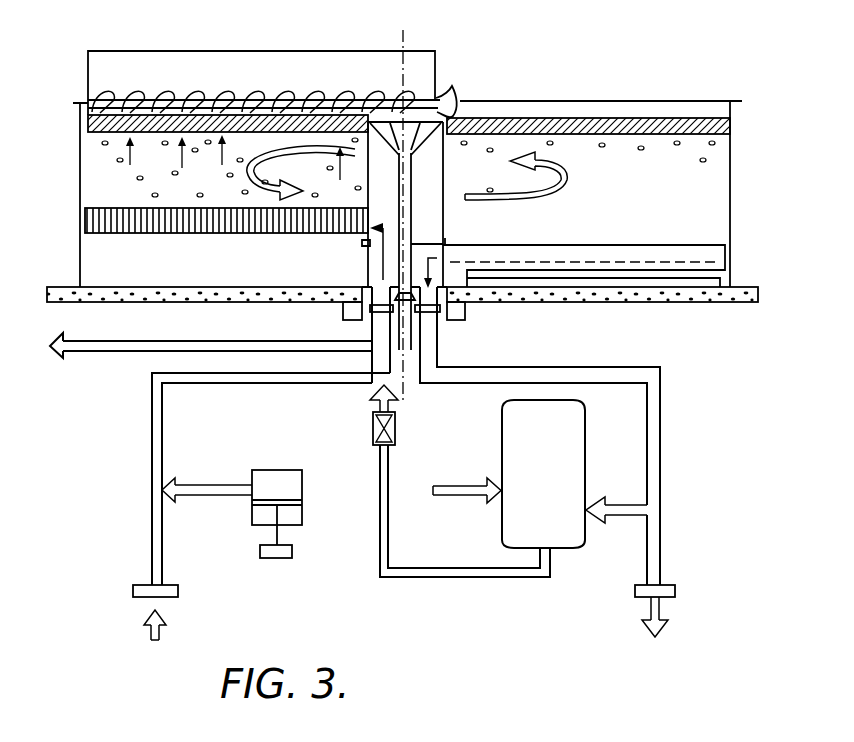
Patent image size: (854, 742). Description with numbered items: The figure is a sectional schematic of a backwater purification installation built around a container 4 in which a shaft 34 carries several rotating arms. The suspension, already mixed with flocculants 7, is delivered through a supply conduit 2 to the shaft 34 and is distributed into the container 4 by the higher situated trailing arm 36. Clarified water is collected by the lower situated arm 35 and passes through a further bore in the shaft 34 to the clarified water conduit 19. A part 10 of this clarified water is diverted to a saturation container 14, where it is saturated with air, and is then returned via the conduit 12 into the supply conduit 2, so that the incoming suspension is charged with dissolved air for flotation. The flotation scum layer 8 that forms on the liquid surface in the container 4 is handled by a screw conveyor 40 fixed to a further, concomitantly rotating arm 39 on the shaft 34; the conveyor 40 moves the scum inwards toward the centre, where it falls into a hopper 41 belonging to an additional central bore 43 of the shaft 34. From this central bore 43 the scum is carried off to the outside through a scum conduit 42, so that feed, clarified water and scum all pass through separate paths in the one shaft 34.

The supply conduit 2 is at (152, 447).
The container 4 is at (78, 172).
The flocculants 7 is at (282, 478).
The flotation scum layer 8 is at (168, 114).
The part of clarified water 10 is at (617, 505).
The conduit 12 is at (380, 492).
The saturation container 14 is at (513, 497).
The clarified water conduit 19 is at (660, 428).
The shaft 34 is at (443, 220).
The arm 35 is at (600, 245).
The trailing arm 36 is at (220, 233).
The arm 39 is at (231, 57).
The screw conveyor 40 is at (314, 96).
The hopper 41 is at (427, 138).
The scum conduit 42 is at (123, 353).
The central bore 43 is at (411, 186).